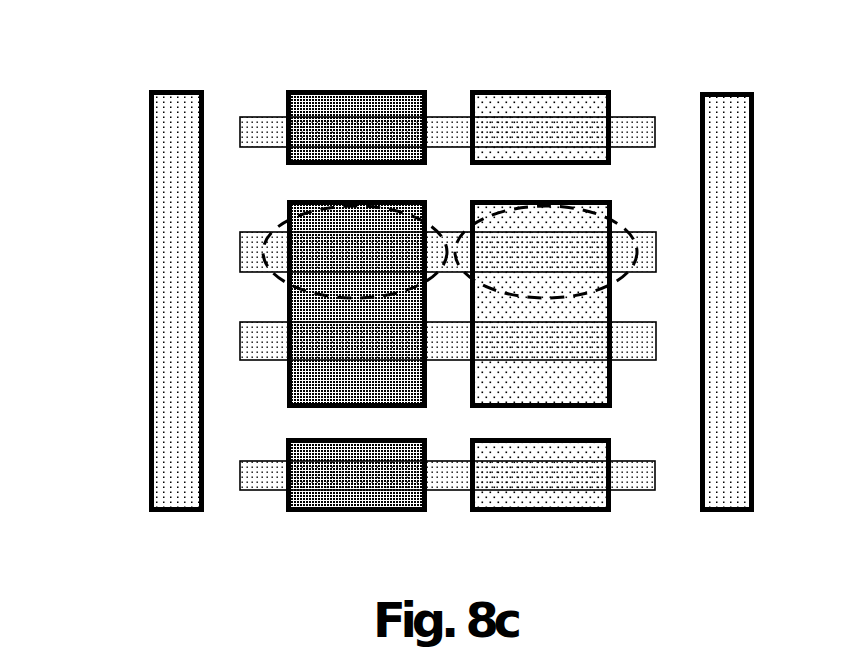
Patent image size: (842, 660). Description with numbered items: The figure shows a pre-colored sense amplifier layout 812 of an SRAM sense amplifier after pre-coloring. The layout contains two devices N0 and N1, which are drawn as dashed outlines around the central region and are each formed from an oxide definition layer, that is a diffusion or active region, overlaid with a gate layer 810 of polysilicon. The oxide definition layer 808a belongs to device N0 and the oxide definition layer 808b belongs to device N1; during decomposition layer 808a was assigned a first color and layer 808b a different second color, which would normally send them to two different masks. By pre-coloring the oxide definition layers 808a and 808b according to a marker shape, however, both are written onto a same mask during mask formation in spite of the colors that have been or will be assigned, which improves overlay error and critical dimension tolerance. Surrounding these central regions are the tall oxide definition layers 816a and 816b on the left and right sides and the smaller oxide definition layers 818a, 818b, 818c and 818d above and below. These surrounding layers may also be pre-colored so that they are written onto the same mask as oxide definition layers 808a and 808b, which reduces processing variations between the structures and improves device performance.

The pre-colored sense amplifier layout 812 is at (117, 50).
The oxide definition layer 816a is at (175, 517).
The oxide definition layer 816b is at (724, 517).
The oxide definition layer 818a is at (353, 88).
The oxide definition layer 818b is at (538, 88).
The oxide definition layer 818c is at (350, 517).
The oxide definition layer 818d is at (533, 517).
The oxide definition layer 808a is at (289, 198).
The oxide definition layer 808b is at (602, 198).
The gate layer 810 is at (460, 248).
The device N0 is at (278, 285).
The device N1 is at (625, 285).